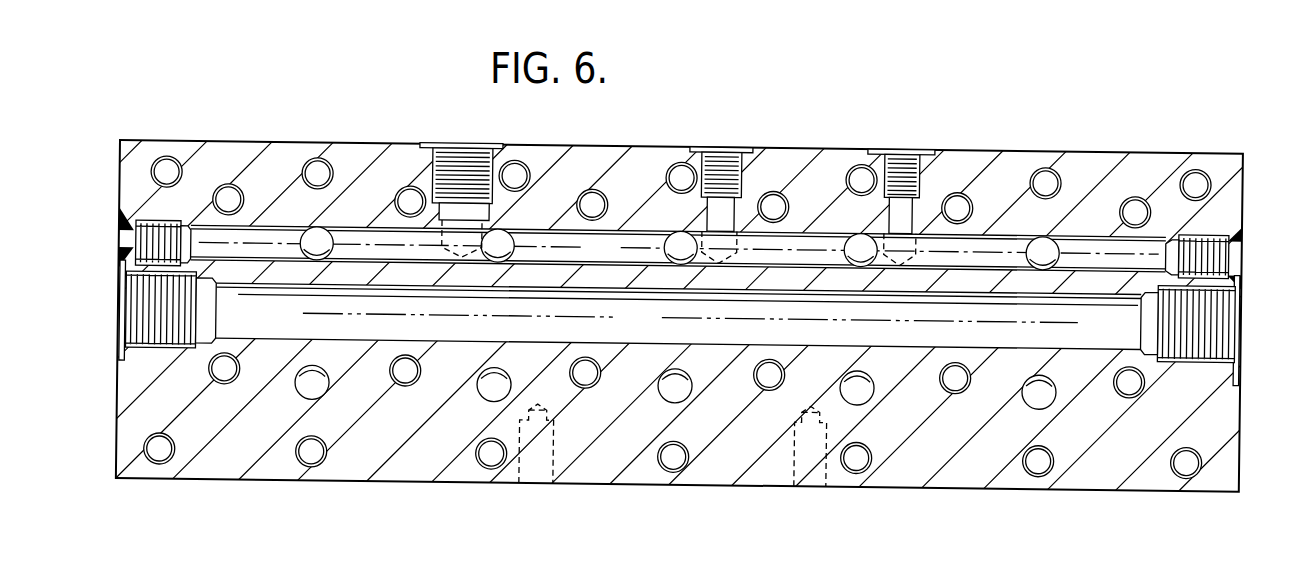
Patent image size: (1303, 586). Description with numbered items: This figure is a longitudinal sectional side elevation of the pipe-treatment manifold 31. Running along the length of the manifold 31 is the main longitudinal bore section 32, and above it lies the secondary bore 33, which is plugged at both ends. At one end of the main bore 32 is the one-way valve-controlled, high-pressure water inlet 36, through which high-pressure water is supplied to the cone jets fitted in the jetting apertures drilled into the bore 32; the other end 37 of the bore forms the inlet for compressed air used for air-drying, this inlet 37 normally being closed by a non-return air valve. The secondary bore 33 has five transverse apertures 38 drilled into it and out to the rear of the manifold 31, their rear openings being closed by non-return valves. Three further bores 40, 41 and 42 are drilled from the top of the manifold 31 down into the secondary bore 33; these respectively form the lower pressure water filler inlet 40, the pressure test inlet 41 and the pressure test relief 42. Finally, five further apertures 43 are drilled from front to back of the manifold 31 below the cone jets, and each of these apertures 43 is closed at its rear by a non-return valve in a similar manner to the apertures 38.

The pipe-treatment manifold 31 is at (918, 482).
The main longitudinal bore section 32 is at (679, 316).
The secondary bore 33 is at (678, 248).
The high-pressure water inlet 36 is at (125, 306).
The compressed air inlet 37 is at (1247, 290).
The transverse apertures 38 is at (311, 235).
The lower pressure water filler inlet 40 is at (449, 139).
The pressure test inlet 41 is at (716, 141).
The pressure test relief 42 is at (909, 140).
The further apertures 43 is at (311, 391).